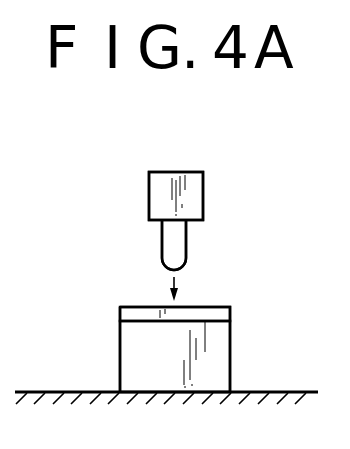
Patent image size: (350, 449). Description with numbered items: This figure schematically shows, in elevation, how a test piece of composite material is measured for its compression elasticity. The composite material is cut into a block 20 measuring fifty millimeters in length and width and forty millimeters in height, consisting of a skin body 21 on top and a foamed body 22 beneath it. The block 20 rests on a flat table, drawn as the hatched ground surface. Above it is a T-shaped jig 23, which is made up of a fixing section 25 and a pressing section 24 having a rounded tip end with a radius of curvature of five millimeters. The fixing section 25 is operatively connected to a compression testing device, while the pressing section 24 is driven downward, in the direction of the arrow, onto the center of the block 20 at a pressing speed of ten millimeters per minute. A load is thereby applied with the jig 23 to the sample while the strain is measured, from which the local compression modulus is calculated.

The block 20 is at (244, 331).
The skin body 21 is at (122, 313).
The foamed body 22 is at (123, 359).
The T-shaped jig 23 is at (143, 191).
The pressing section 24 is at (180, 245).
The fixing section 25 is at (196, 196).